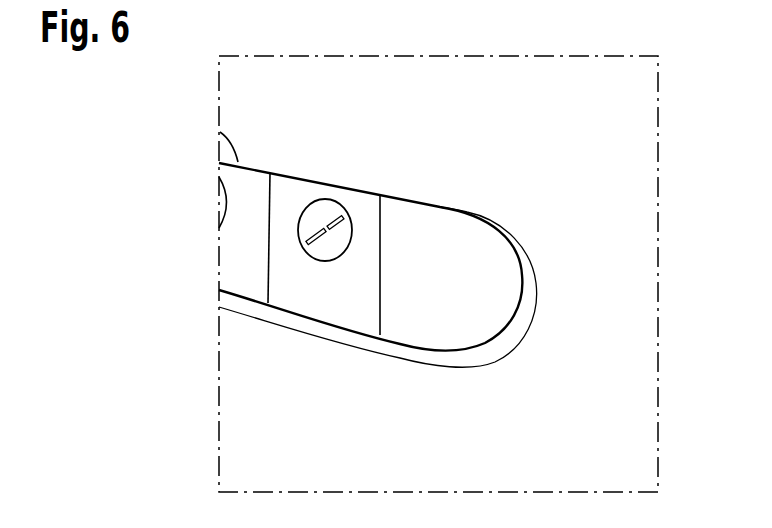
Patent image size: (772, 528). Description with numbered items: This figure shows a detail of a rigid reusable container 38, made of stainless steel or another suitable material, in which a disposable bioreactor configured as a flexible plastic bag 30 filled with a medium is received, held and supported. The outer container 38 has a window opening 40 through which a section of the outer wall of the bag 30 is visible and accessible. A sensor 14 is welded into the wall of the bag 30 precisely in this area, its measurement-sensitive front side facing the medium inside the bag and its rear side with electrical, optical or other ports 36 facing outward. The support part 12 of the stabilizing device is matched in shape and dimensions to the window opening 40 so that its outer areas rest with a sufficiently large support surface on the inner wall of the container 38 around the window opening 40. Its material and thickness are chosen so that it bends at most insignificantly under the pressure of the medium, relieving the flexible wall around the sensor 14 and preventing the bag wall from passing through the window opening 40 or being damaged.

The support part 12 is at (326, 294).
The sensor 14 is at (305, 210).
The flexible disposable bag 30 is at (480, 285).
The ports 36 is at (298, 232).
The rigid reusable container 38 is at (360, 136).
The window opening 40 is at (220, 132).